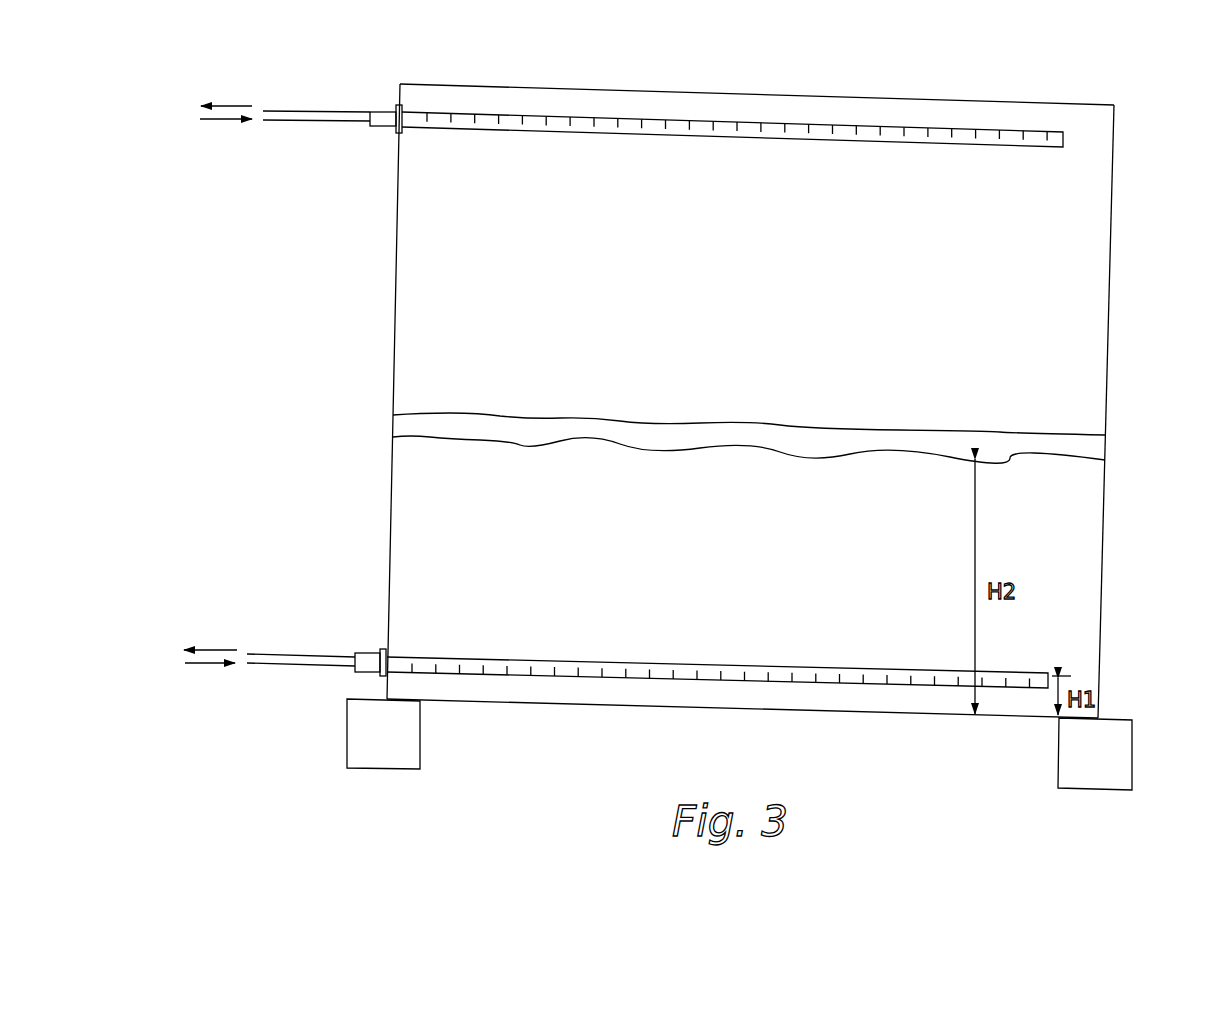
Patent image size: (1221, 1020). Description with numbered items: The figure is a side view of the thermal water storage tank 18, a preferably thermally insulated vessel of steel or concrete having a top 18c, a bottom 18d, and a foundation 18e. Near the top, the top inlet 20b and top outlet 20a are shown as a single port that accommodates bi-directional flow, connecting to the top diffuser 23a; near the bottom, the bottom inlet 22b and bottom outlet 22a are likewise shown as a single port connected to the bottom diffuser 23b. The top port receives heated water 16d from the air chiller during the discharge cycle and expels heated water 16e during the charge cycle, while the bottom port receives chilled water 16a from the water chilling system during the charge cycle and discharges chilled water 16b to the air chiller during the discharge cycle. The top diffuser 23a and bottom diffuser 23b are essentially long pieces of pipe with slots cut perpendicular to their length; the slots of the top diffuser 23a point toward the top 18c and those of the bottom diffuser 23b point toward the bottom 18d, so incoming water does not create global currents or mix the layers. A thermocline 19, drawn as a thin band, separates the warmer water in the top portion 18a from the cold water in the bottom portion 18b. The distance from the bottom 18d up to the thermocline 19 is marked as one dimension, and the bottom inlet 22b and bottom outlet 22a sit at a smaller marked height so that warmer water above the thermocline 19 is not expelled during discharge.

The chilled water 16a is at (212, 666).
The chilled water 16b is at (212, 648).
The heated water 16d is at (230, 121).
The heated water 16e is at (226, 102).
The thermal water storage tank 18 is at (514, 804).
The top portion 18a is at (408, 287).
The bottom portion 18b is at (402, 540).
The top 18c is at (893, 99).
The bottom 18d is at (877, 713).
The foundation 18e is at (1123, 757).
The thermocline 19 is at (1097, 448).
The top outlet 20a is at (383, 107).
The top inlet 20b is at (383, 130).
The bottom outlet 22a is at (370, 653).
The bottom inlet 22b is at (365, 671).
The top diffuser 23a is at (693, 136).
The bottom diffuser 23b is at (680, 663).